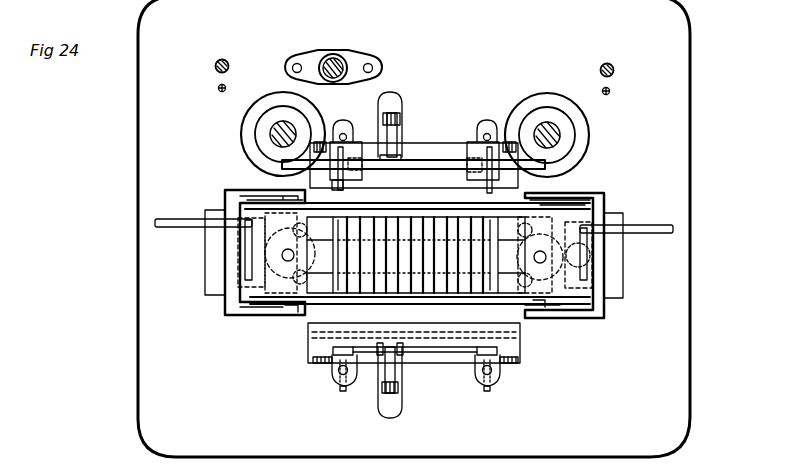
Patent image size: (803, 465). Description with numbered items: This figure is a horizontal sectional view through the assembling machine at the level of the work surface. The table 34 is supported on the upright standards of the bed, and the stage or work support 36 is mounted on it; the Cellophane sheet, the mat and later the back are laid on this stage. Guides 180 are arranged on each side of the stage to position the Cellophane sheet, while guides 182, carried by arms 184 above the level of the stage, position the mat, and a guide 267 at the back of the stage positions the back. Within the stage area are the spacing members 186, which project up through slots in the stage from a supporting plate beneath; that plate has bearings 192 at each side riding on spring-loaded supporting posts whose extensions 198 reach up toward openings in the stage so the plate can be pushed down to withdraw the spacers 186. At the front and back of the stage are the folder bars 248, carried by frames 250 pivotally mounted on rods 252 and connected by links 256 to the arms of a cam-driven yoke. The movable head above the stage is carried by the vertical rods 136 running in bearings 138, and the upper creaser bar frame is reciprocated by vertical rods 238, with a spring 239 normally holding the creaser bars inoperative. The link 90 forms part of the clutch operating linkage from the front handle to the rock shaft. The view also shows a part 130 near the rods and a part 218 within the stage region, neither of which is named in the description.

The table 34 is at (678, 379).
The stage or work support 36 is at (505, 285).
The link 90 is at (322, 262).
The mounting bracket 130 is at (340, 62).
The vertical rods 136 is at (558, 134).
The bearings 138 is at (254, 126).
The guides 180 is at (606, 311).
The guides 182 is at (588, 276).
The arms 184 is at (648, 223).
The spacing members 186 is at (431, 226).
The bearings 192 is at (288, 262).
The extensions 198 is at (542, 251).
The gear 218 is at (592, 251).
The vertical rods 238 is at (607, 63).
The spring 239 is at (624, 97).
The folder bars 248 is at (448, 180).
The frames 250 is at (333, 364).
The rods 252 is at (372, 348).
The links 256 is at (393, 140).
The guide 267 is at (343, 190).